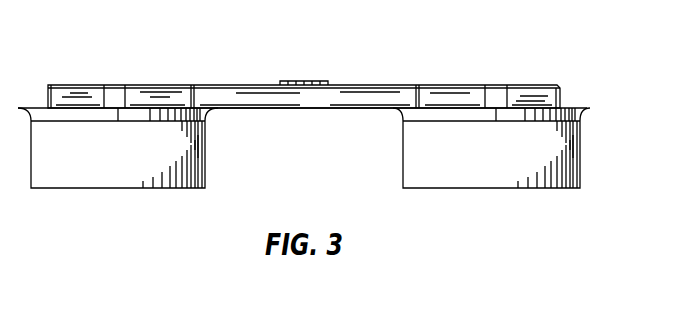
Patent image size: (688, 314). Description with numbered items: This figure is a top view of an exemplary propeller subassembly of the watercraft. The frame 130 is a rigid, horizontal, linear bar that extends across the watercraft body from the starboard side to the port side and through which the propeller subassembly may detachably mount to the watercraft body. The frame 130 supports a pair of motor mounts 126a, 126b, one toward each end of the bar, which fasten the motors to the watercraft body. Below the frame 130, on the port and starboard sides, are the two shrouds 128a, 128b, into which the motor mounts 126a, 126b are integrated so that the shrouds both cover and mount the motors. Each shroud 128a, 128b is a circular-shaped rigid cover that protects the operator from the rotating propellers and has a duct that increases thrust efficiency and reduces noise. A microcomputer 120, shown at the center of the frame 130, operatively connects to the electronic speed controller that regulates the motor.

The microcomputer 120 is at (312, 81).
The motor mount 126a is at (498, 84).
The motor mount 126b is at (114, 84).
The shroud 128a is at (492, 188).
The shroud 128b is at (118, 188).
The frame 130 is at (303, 108).